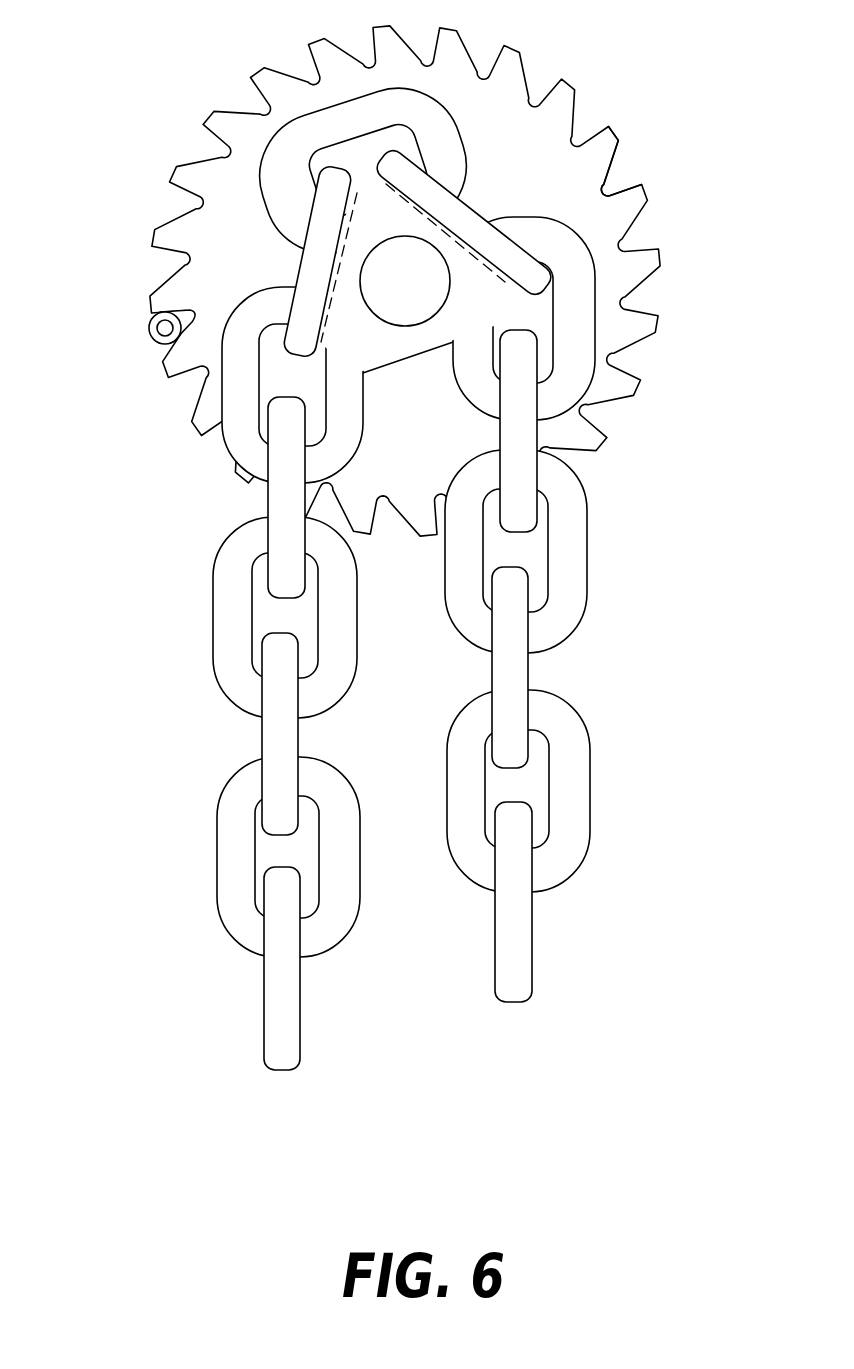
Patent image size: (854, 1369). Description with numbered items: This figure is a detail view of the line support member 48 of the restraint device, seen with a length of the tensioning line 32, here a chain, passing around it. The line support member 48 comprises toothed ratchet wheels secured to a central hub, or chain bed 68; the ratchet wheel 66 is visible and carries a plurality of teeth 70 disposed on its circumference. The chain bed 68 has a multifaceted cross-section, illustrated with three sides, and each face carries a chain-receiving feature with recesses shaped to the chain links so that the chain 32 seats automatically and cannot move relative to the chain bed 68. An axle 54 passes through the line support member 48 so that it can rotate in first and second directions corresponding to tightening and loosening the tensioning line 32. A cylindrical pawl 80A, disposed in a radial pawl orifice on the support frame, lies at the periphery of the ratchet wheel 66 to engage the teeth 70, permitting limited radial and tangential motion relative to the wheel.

The line support member 48 is at (125, 132).
The toothed ratchet wheel 66 is at (525, 137).
The teeth 70 is at (607, 143).
The cylindrical pawl 80A is at (155, 316).
The tensioning line 32 is at (578, 578).
The chain bed 68 is at (331, 356).
The axle 54 is at (385, 315).